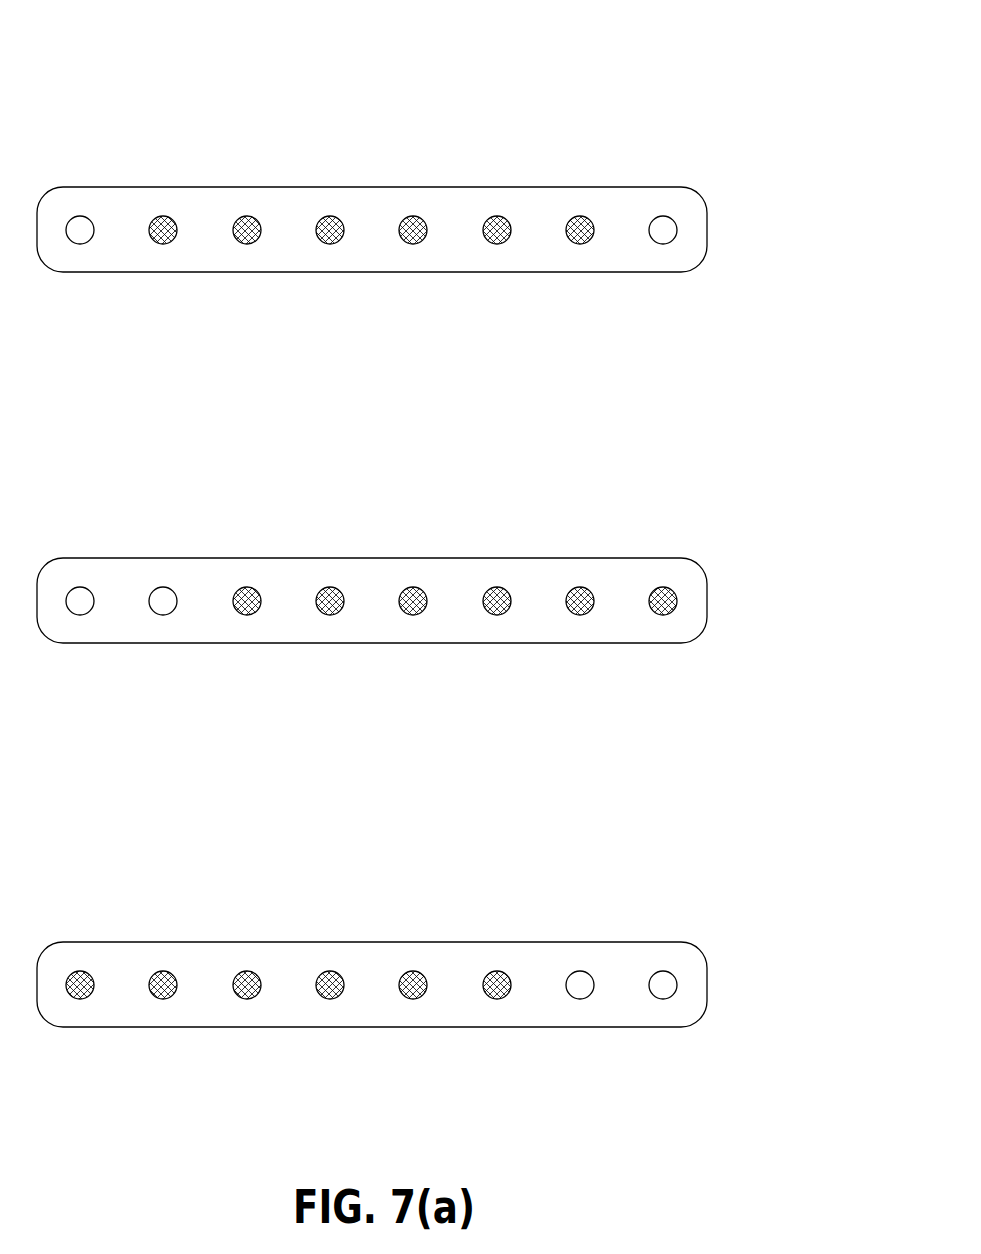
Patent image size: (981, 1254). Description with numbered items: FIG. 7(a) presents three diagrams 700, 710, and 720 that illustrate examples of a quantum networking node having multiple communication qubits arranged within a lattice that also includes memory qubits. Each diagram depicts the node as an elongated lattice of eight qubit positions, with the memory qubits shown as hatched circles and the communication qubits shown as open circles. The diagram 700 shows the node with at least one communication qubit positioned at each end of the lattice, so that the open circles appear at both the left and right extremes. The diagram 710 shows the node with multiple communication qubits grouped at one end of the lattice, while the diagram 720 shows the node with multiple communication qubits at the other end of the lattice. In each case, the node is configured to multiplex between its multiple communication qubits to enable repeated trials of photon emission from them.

The diagram 700 is at (542, 45).
The diagram 710 is at (542, 417).
The diagram 720 is at (542, 800).